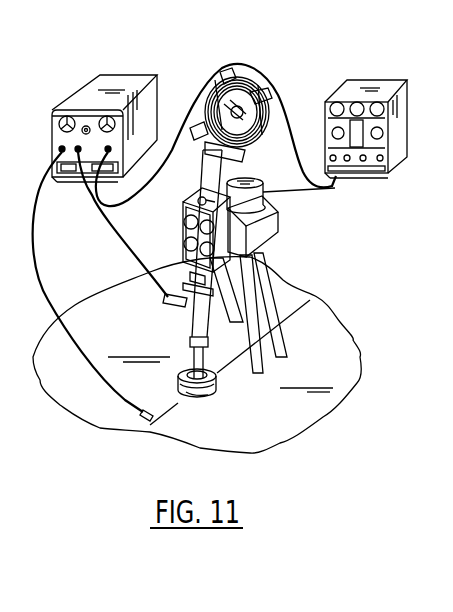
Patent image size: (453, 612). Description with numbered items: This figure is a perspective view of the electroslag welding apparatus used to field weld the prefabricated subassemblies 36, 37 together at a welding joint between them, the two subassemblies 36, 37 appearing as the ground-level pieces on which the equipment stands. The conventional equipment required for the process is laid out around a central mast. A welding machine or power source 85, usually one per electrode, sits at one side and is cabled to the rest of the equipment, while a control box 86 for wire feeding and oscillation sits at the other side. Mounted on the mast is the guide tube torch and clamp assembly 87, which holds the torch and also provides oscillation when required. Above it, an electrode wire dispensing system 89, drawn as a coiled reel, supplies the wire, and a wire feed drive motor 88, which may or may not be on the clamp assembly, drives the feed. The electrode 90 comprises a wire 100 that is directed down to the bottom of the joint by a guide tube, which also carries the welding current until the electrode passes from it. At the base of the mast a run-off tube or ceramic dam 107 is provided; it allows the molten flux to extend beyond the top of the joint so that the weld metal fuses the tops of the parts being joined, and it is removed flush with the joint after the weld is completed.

The subassembly 36 is at (137, 357).
The subassembly 37 is at (317, 383).
The welding machine or power source 85 is at (118, 86).
The control box 86 is at (377, 86).
The guide tube torch and clamp assembly 87 is at (183, 230).
The wire feed drive motor 88 is at (272, 212).
The electrode wire dispensing system 89 is at (250, 148).
The electrode 90 is at (183, 368).
The wire 100 is at (197, 184).
The run-off tube or ceramic dam 107 is at (203, 391).